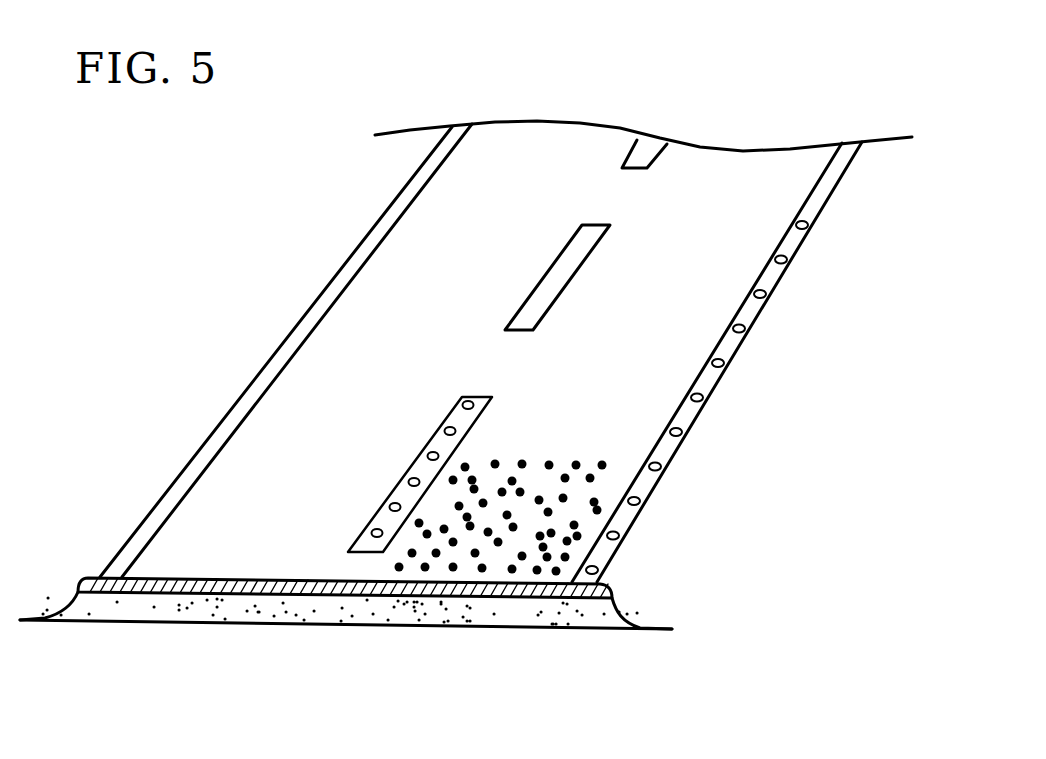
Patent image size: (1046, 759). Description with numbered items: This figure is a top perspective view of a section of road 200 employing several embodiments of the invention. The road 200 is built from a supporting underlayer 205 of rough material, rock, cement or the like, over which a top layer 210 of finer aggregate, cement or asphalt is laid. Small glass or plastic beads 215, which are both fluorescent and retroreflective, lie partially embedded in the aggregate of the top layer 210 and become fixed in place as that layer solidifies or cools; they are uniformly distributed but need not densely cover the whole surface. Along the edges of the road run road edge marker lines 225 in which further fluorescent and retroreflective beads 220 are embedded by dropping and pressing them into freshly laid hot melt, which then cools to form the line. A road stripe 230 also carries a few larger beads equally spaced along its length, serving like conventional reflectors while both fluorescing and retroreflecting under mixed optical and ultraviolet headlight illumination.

The road 200 is at (268, 458).
The supporting underlayer 205 is at (362, 610).
The top layer 210 is at (235, 577).
The beads 215 is at (550, 463).
The beads 220 is at (426, 455).
The road edge marker lines 225 is at (332, 278).
The road stripe 230 is at (477, 395).